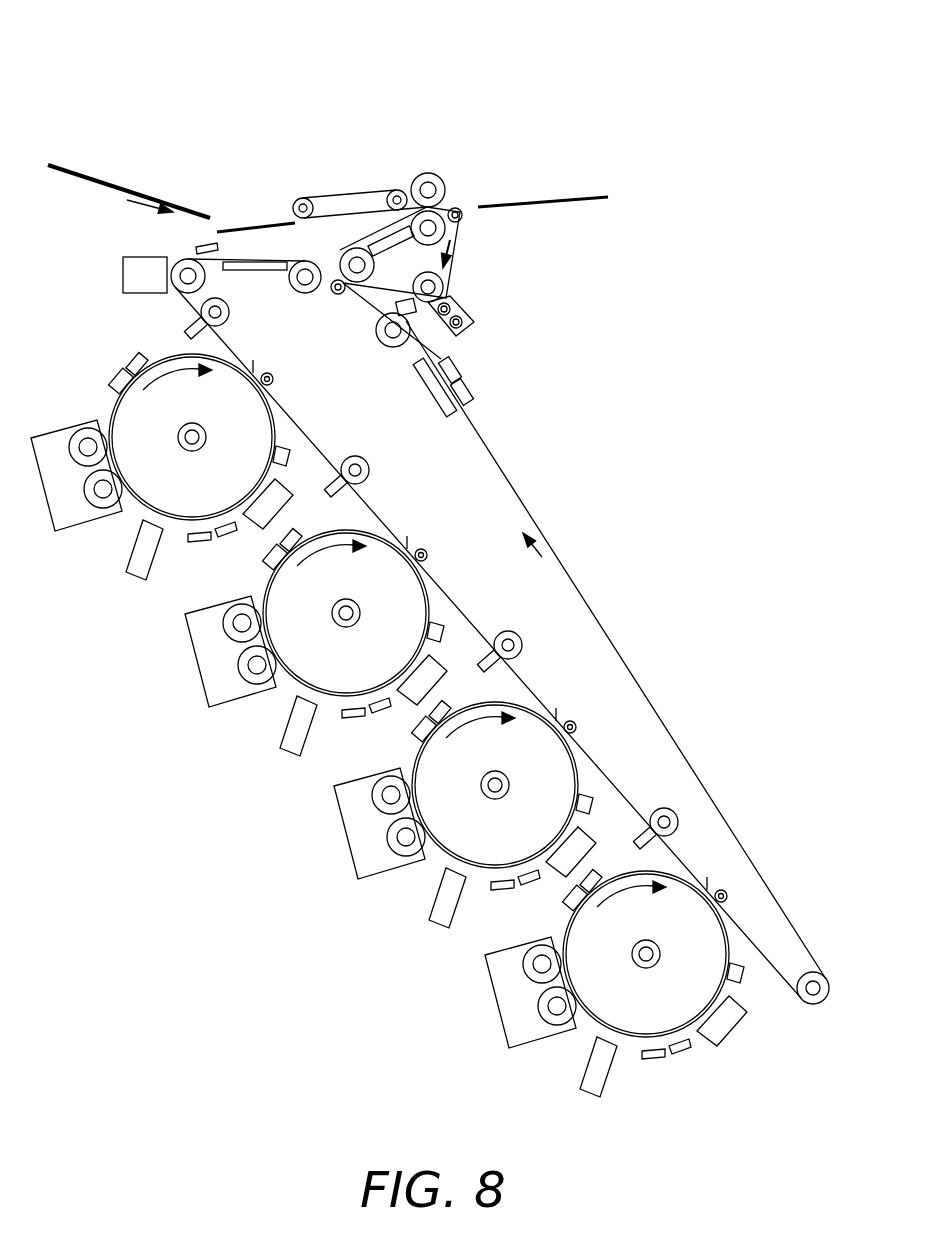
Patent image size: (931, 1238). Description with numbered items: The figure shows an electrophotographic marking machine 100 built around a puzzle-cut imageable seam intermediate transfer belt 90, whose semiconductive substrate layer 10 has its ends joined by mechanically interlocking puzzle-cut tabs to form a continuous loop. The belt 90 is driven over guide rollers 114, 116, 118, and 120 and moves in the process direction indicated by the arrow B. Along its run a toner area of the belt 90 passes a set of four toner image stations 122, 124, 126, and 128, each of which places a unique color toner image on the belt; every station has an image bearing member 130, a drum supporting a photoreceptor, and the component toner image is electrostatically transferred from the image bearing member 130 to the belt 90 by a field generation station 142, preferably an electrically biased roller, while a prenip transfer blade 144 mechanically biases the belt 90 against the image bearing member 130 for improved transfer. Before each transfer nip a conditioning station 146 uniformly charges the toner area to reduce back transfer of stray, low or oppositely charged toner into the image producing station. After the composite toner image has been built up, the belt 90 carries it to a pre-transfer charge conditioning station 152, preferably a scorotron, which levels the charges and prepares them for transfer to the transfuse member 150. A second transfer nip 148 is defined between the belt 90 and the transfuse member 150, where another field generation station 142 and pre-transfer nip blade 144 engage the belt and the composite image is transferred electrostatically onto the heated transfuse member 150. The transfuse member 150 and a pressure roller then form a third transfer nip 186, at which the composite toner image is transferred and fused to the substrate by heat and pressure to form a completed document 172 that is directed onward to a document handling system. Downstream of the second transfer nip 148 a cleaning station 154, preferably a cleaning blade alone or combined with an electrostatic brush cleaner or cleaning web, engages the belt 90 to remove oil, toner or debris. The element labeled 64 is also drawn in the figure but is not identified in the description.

The electrophotographic marking machine 100 is at (509, 84).
The semiconductive substrate layer 10 is at (659, 359).
The completed document 172 is at (563, 197).
The imageable seam intermediate transfer belt 90 is at (512, 483).
The process direction arrow B is at (555, 558).
The guide roller 114 is at (800, 1002).
The guide roller 116 is at (182, 289).
The guide roller 118 is at (305, 288).
The guide roller 120 is at (385, 341).
The second transfer nip 148 is at (347, 254).
The third transfer nip 186 is at (468, 180).
The transfuse member 150 is at (458, 257).
The pre-transfer charge conditioning station 152 is at (460, 368).
The blade 64 is at (443, 408).
The cleaning station 154 is at (123, 273).
The conditioning station 146 is at (190, 328).
The field generation station 142 is at (333, 281).
The prenip transfer blade 144 is at (253, 360).
The image bearing member 130 is at (342, 423).
The toner image station 122 is at (126, 505).
The toner image station 124 is at (287, 687).
The toner image station 126 is at (437, 860).
The toner image station 128 is at (588, 1029).